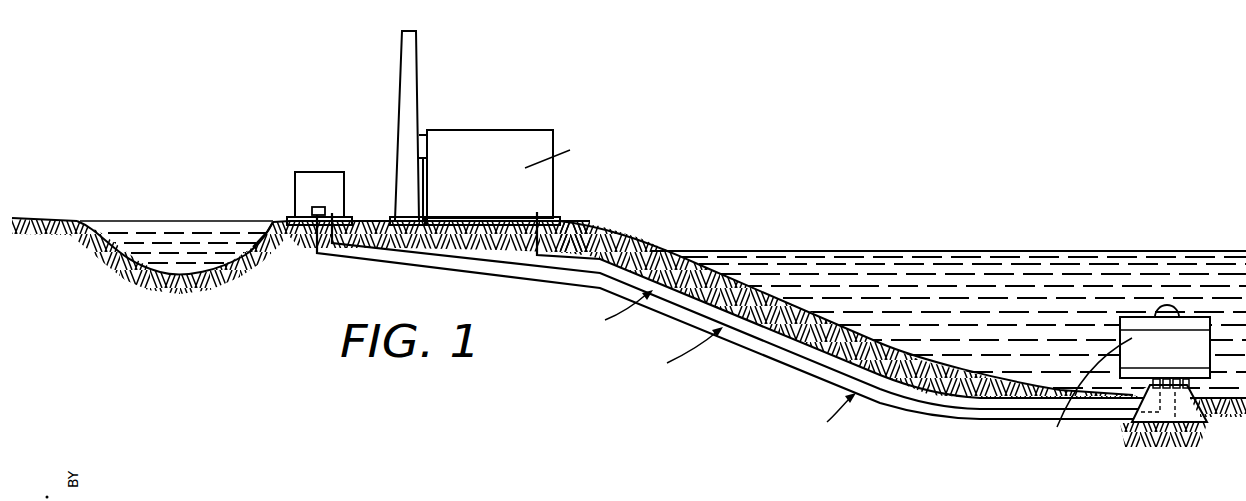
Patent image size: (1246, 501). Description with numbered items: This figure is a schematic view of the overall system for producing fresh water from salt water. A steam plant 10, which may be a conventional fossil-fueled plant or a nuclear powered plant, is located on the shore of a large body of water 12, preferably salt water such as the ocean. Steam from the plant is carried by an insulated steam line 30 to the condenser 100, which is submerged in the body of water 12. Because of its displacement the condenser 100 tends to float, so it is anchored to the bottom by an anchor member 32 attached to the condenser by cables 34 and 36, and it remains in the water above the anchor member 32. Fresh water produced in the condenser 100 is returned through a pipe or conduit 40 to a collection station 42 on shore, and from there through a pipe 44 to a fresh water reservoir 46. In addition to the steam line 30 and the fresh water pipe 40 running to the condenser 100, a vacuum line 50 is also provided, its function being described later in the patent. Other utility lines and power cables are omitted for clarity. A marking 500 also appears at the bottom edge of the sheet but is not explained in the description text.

The steam plant 10 is at (490, 136).
The body of water 12 is at (852, 252).
The steam line 30 is at (598, 256).
The anchor member 32 is at (1190, 424).
The cable 34 is at (1153, 379).
The cable 36 is at (1188, 379).
The fresh water pipe 40 is at (693, 310).
The collection station 42 is at (320, 173).
The pipe 44 is at (253, 222).
The fresh water reservoir 46 is at (207, 228).
The vacuum line 50 is at (798, 373).
The condenser 100 is at (1135, 322).
The sheet reference 500 is at (1009, 497).